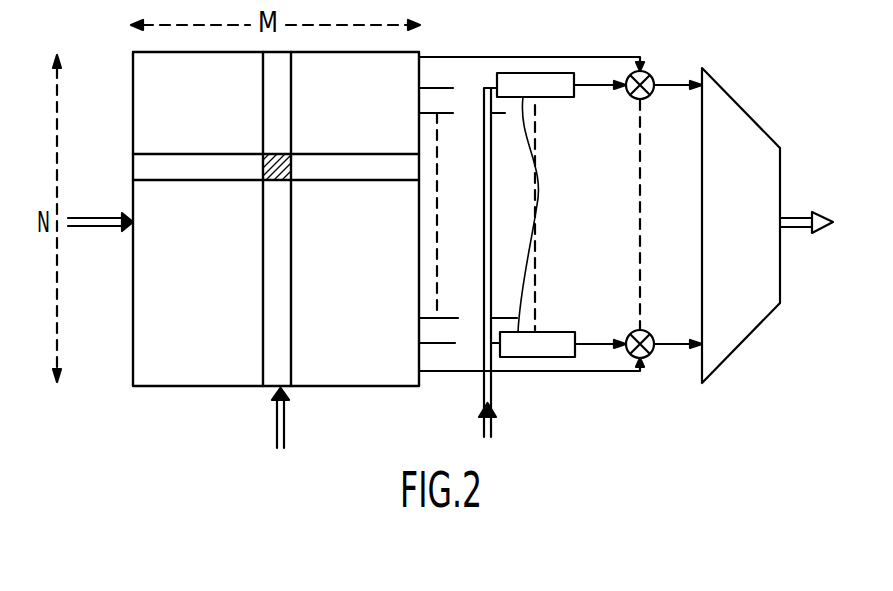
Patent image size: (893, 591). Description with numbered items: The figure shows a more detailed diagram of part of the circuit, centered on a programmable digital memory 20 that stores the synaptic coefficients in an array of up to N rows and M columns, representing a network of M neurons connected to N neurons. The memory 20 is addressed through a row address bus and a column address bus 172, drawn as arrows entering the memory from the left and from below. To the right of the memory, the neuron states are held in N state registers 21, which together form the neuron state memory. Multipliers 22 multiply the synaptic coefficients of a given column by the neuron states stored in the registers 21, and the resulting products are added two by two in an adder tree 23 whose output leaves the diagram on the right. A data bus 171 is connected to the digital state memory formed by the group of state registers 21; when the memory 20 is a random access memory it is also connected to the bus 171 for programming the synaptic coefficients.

The programmable digital memory 20 is at (197, 386).
The state registers 21 is at (547, 98).
The multipliers 22 is at (651, 95).
The adder tree 23 is at (750, 338).
The data bus 171 is at (494, 386).
The address buses 172 is at (310, 420).